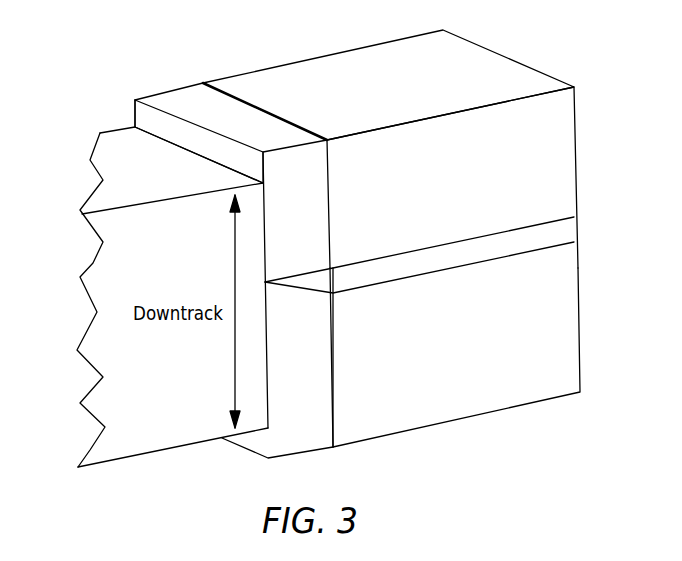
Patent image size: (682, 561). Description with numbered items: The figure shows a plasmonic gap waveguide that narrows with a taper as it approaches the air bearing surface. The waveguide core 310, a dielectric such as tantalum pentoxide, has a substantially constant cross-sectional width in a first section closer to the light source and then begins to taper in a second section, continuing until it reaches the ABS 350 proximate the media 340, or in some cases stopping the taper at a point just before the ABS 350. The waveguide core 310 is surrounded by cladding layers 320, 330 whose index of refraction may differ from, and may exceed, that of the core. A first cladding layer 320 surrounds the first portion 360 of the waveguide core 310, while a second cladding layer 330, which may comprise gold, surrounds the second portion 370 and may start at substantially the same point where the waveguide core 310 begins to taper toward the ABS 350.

The waveguide core 310 is at (570, 233).
The first cladding layer 320 is at (495, 52).
The second cladding layer 330 is at (185, 100).
The media 340 is at (98, 293).
The ABS 350 is at (143, 120).
The first portion 360 is at (425, 220).
The second portion 370 is at (282, 258).